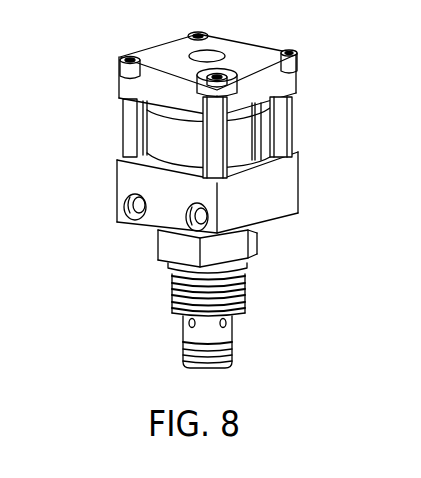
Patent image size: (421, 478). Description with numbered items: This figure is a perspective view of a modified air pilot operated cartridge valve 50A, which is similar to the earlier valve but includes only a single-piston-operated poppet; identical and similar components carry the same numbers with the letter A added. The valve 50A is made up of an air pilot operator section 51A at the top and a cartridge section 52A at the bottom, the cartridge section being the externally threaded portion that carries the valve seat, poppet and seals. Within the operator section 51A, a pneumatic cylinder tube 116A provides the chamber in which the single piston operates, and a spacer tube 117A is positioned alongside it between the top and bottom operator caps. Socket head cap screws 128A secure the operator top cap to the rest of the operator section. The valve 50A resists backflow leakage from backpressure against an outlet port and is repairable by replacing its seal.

The modified valve 50A is at (118, 18).
The air pilot operator section 51A is at (86, 163).
The cartridge section 52A is at (133, 302).
The pneumatic cylinder tube #1 116A is at (260, 118).
The spacer tube 117A is at (213, 138).
The socket head cap screw 128A is at (198, 83).